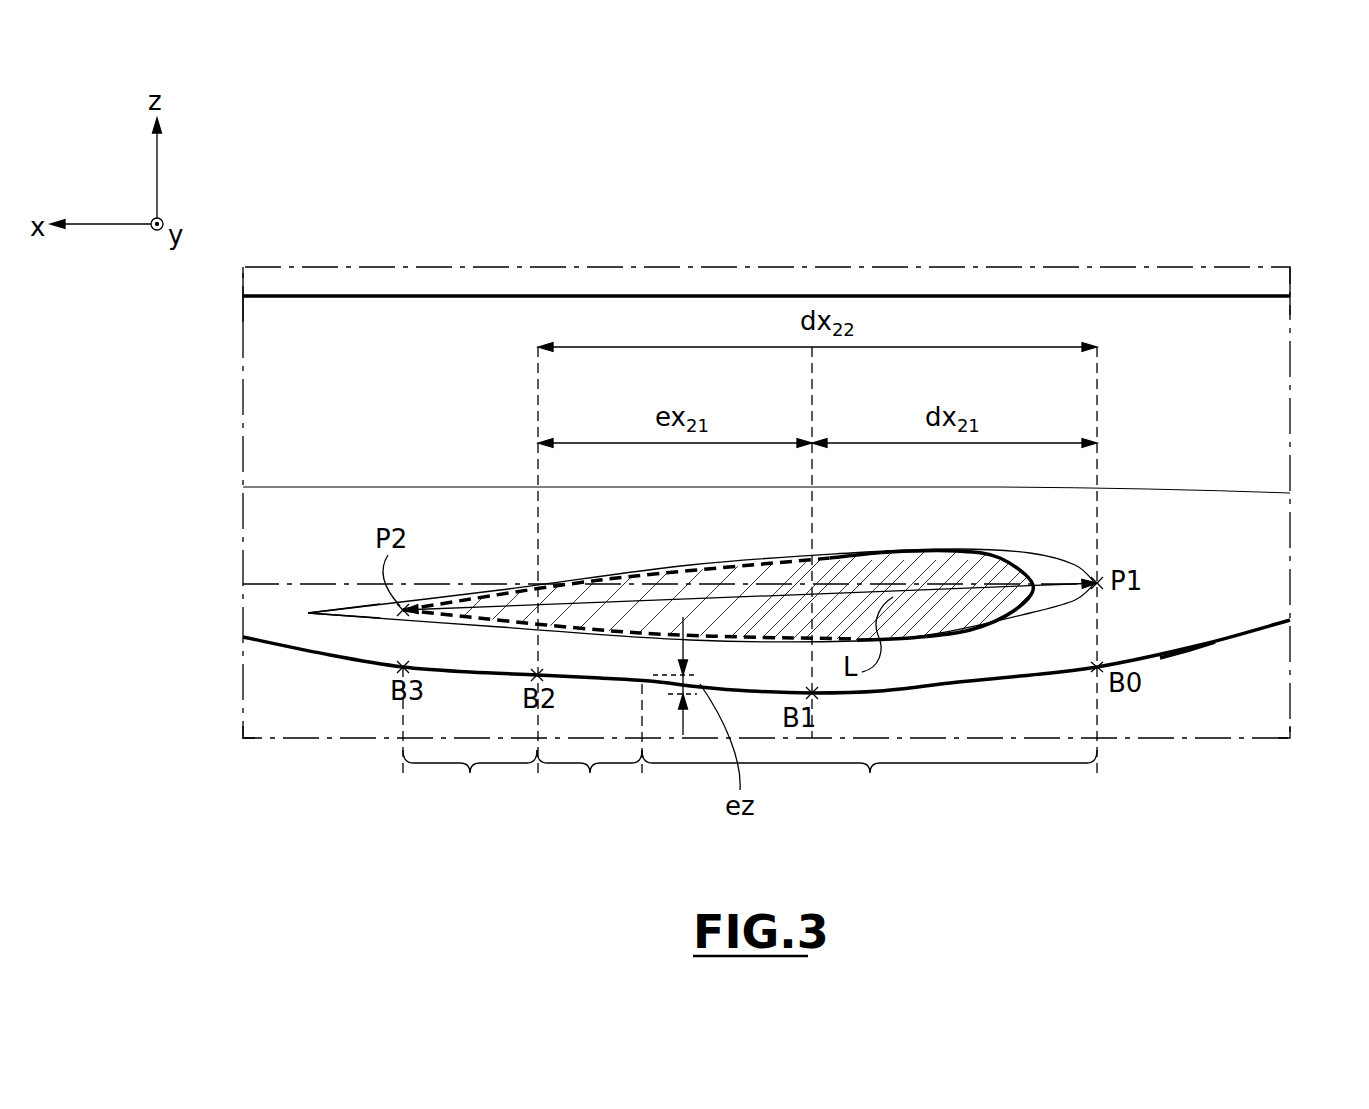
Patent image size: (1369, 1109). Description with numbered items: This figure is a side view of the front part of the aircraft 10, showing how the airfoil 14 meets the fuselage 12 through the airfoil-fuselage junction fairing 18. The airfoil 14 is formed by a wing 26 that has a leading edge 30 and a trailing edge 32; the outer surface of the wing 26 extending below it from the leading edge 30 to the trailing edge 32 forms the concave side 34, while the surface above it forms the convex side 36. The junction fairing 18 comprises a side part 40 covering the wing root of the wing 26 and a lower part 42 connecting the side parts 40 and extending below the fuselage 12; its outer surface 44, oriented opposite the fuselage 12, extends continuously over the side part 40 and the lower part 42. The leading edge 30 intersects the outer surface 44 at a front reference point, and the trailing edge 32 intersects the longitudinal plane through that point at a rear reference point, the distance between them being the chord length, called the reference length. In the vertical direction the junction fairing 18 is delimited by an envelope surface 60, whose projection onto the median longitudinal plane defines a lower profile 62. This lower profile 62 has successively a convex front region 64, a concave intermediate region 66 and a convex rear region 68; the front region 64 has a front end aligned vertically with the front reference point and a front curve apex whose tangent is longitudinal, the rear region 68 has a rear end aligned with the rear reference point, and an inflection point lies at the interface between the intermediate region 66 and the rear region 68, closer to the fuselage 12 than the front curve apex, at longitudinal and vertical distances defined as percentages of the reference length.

The aircraft 10 is at (1310, 225).
The fuselage 12 is at (1140, 345).
The airfoil 14 is at (996, 616).
The airfoil-fuselage junction fairing 18 is at (1178, 527).
The wing 26 is at (1062, 598).
The leading edge 30 is at (1060, 563).
The trailing edge 32 is at (363, 603).
The concave side 34 is at (913, 641).
The convex side 36 is at (1000, 550).
The side part 40 is at (1183, 615).
The lower part 42 is at (332, 642).
The outer surface 44 is at (1231, 546).
The envelope surface 60 is at (1090, 656).
The lower profile 62 is at (1184, 654).
The front region 64 is at (869, 783).
The intermediate region 66 is at (589, 783).
The rear region 68 is at (470, 783).